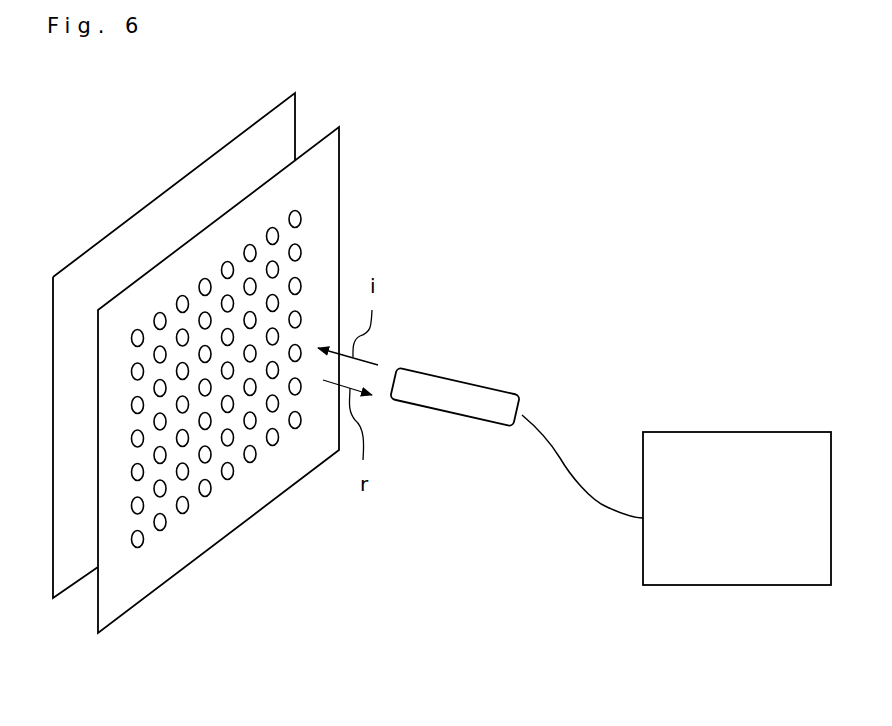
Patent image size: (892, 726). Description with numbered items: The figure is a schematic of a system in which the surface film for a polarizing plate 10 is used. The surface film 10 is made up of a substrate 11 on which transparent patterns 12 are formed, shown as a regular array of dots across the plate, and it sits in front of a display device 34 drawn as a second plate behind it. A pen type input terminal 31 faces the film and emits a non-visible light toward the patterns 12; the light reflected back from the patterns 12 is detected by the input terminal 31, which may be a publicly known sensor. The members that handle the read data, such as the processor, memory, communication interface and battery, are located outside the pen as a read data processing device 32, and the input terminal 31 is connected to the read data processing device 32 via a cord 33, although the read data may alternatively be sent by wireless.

The surface film for a polarizing plate 10 is at (236, 558).
The substrate 11 is at (120, 583).
The transparent patterns 12 is at (301, 217).
The input terminal 31 is at (448, 377).
The read data processing device 32 is at (722, 431).
The cord 33 is at (577, 483).
The display device 34 is at (110, 260).